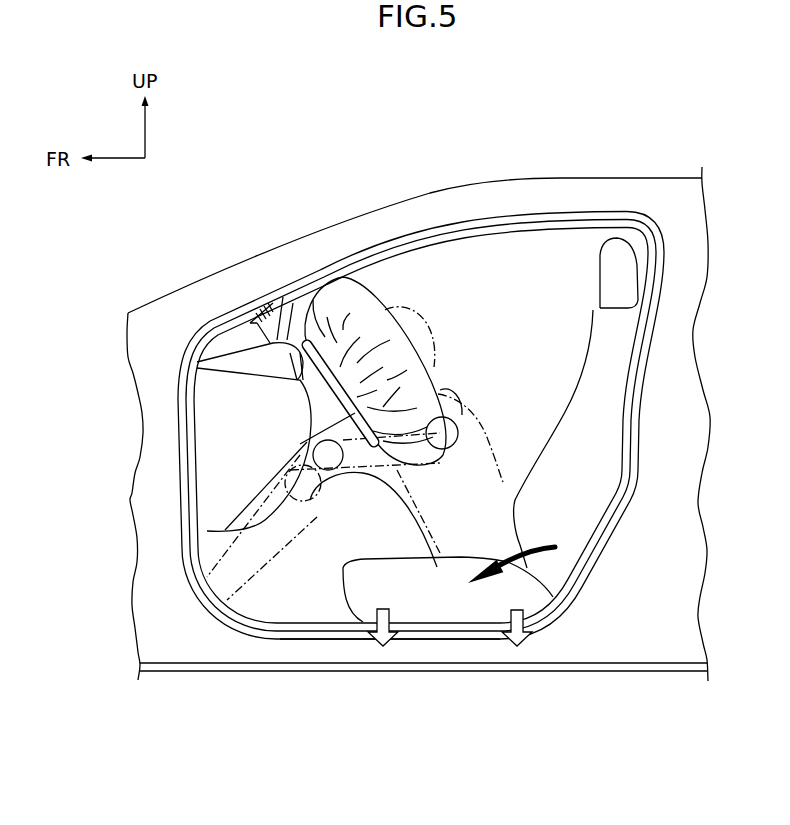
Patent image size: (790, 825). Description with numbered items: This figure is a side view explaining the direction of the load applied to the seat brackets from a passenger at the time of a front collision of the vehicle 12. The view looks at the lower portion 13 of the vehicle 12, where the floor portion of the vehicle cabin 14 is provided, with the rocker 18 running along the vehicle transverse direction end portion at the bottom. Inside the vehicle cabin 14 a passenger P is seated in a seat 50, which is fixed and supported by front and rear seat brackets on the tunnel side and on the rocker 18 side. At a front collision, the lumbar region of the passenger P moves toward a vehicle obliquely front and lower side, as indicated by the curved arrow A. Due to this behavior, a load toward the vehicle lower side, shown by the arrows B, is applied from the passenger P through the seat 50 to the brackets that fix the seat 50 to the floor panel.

The vehicle 12 is at (418, 460).
The lower portion 13 is at (211, 676).
The vehicle cabin 14 is at (503, 281).
The rocker 18 is at (325, 650).
The seat 50 is at (460, 556).
The passenger P is at (483, 415).
The arrow A is at (516, 568).
The arrows B is at (386, 645).